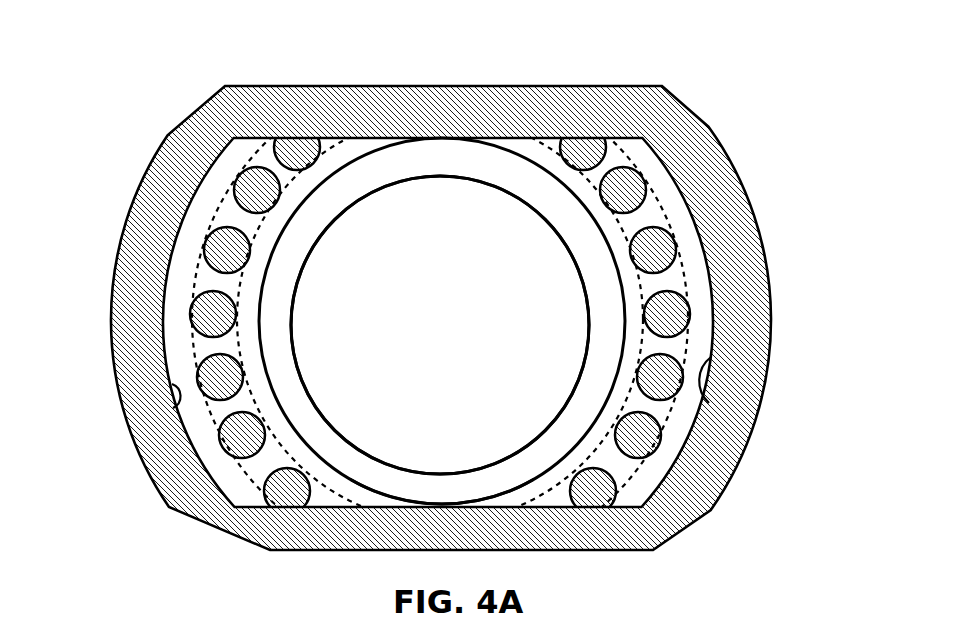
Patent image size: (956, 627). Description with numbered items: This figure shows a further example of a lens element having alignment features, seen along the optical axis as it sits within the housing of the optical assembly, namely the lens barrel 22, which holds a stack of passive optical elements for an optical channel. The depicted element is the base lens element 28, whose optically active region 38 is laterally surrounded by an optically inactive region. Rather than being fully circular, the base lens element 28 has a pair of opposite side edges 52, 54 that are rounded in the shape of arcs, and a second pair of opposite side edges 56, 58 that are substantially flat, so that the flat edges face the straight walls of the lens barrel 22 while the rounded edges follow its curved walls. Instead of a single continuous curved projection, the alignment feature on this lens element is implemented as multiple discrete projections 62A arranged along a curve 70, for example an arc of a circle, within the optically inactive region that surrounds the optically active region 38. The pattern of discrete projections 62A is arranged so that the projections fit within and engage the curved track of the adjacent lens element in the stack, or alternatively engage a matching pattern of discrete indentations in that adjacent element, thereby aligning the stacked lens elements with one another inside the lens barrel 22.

The lens barrel 22 is at (662, 538).
The base lens element 28 is at (500, 218).
The optically active region 38 is at (460, 328).
The rounded side edge 52 is at (176, 400).
The rounded side edge 54 is at (703, 403).
The flat side edge 56 is at (385, 507).
The flat side edge 58 is at (430, 137).
The discrete projections 62A is at (240, 190).
The curve 70 is at (197, 277).